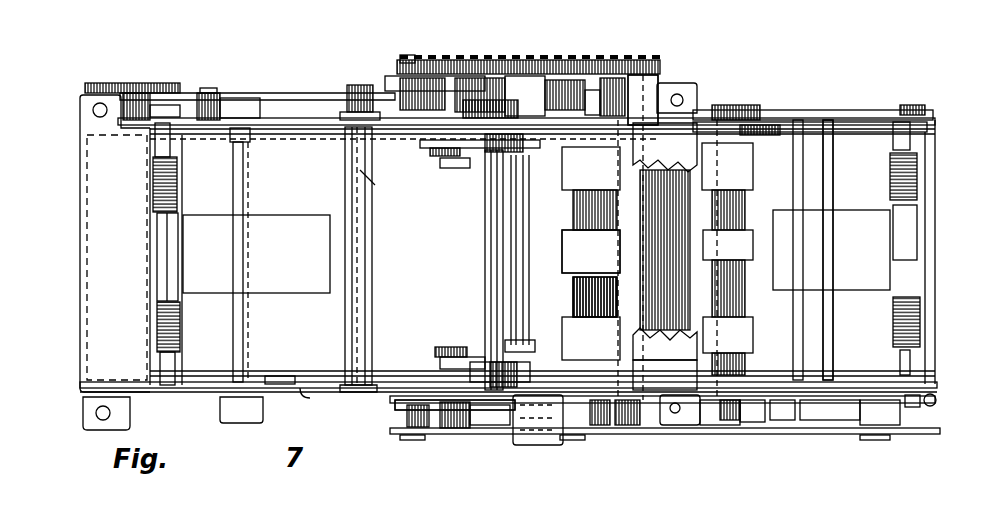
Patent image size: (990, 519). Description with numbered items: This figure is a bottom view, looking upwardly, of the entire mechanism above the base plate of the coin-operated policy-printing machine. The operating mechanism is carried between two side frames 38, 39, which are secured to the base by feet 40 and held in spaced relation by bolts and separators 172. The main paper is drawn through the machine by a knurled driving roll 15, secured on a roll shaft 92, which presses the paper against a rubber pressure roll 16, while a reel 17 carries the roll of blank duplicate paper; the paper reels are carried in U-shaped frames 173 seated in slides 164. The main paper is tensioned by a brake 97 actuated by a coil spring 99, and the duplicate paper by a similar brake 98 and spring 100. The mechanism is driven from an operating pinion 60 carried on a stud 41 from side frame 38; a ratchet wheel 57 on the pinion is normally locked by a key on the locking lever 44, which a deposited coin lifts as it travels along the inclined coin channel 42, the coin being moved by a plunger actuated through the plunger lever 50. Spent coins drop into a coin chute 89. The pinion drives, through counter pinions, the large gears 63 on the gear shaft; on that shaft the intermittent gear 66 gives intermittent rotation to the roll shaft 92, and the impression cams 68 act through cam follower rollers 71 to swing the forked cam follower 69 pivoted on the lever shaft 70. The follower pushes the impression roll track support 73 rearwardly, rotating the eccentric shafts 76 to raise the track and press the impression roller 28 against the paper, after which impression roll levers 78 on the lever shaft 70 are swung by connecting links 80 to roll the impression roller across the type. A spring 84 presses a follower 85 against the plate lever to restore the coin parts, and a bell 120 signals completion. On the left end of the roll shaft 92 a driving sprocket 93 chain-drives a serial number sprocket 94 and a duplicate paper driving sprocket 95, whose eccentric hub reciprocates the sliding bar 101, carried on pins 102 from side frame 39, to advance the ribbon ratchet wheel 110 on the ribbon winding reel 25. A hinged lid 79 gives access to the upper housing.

The driving roll 15 is at (577, 250).
The rubber pressure roll 16 is at (737, 248).
The reel 17 is at (830, 330).
The ribbon winding reel 25 is at (135, 83).
The impression roller 28 is at (603, 297).
The side frame 38 is at (320, 395).
The side frame 39 is at (803, 117).
The feet 40 is at (96, 412).
The stud 41 is at (720, 443).
The coin channel 42 is at (690, 430).
The locking lever 44 is at (817, 423).
The plunger lever 50 is at (847, 430).
The ratchet wheel 57 is at (737, 430).
The operating pinion 60 is at (793, 417).
The large gear 63 is at (447, 90).
The intermittent gear 66 is at (623, 420).
The impression cams 68 is at (545, 165).
The forked cam follower 69 is at (455, 162).
The lever shaft 70 is at (490, 213).
The cam follower rollers 71 is at (435, 155).
The impression roll track support 73 is at (325, 140).
The eccentric shafts 76 is at (560, 100).
The impression roll levers 78 is at (410, 403).
The lid 79 is at (388, 100).
The connecting links 80 is at (540, 87).
The spring 84 is at (927, 410).
The follower 85 is at (913, 427).
The coin chute 89 is at (537, 440).
The roll shaft 92 is at (640, 413).
The driving sprocket 93 is at (640, 75).
The serial number sprocket 94 is at (513, 67).
The duplicate paper driving sprocket 95 is at (440, 60).
The brake 97 is at (310, 290).
The brake 98 is at (867, 257).
The coil spring 99 is at (180, 337).
The spring 100 is at (920, 323).
The sliding bar 101 is at (310, 97).
The pins 102 is at (210, 93).
The ribbon ratchet wheel 110 is at (155, 85).
The bell 120 is at (375, 185).
The slides 164 is at (850, 123).
The bolts and separators 172 is at (370, 287).
The U-shaped frames 173 is at (230, 135).